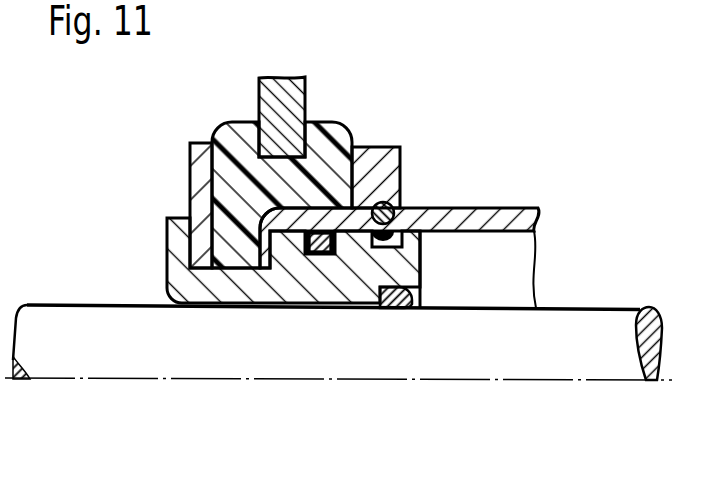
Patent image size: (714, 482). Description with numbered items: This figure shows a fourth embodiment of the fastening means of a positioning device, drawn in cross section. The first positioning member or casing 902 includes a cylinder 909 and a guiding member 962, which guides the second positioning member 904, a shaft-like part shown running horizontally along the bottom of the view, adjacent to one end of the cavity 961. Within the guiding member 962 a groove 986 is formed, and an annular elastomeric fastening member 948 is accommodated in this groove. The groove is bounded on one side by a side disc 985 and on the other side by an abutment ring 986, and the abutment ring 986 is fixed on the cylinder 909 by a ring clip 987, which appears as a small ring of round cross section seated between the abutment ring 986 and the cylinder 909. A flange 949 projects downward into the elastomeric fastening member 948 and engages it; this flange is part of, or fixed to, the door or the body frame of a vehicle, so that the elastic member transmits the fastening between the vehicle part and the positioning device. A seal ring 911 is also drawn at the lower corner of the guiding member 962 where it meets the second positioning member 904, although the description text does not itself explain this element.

The first positioning member 902 is at (570, 170).
The second positioning member 904 is at (104, 422).
The cylinder 909 is at (503, 153).
The seal ring 911 is at (416, 352).
The elastomeric fastening member 948 is at (374, 108).
The flange 949 is at (283, 86).
The cavity 961 is at (567, 262).
The guiding member 962 is at (310, 358).
The side disc 985 is at (190, 164).
The abutment ring 986 is at (435, 119).
The ring clip 987 is at (437, 170).